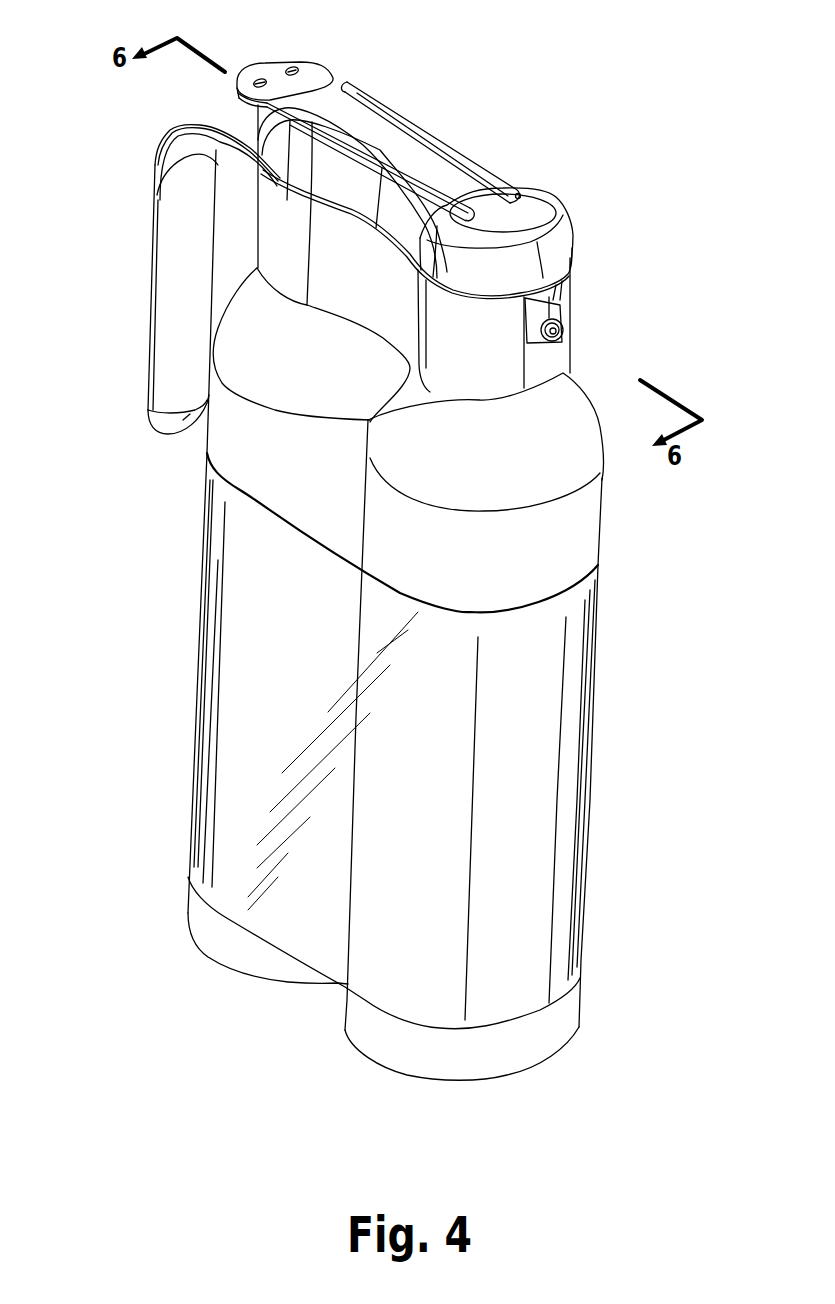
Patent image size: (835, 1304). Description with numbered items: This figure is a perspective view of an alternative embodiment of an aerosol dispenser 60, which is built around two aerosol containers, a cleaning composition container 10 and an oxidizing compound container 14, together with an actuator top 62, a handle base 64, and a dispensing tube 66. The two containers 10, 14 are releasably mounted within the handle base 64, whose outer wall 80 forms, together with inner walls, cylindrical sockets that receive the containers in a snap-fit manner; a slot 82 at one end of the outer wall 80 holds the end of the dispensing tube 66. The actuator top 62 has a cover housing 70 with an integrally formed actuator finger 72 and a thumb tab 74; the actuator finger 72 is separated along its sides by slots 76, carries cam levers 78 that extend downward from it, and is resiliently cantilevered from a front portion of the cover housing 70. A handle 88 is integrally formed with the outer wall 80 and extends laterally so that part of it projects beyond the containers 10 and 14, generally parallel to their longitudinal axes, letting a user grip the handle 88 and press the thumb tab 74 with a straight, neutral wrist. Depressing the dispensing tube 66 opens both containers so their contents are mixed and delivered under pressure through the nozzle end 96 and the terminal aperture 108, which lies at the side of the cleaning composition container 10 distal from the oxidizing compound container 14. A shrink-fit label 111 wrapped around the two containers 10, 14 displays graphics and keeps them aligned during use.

The cleaning composition container 10 is at (568, 453).
The oxidizing compound container 14 is at (252, 360).
The aerosol dispenser 60 is at (580, 283).
The actuator top 62 is at (530, 207).
The handle base 64 is at (547, 367).
The dispensing tube 66 is at (537, 308).
The cover housing 70 is at (533, 258).
The actuator finger 72 is at (373, 125).
The thumb tab 74 is at (275, 80).
The slots 76 is at (497, 182).
The cam levers 78 is at (450, 203).
The outer wall 80 is at (513, 387).
The slot 82 is at (535, 310).
The handle 88 is at (170, 247).
The nozzle end 96 is at (553, 322).
The terminal aperture 108 is at (556, 330).
The label 111 is at (297, 530).